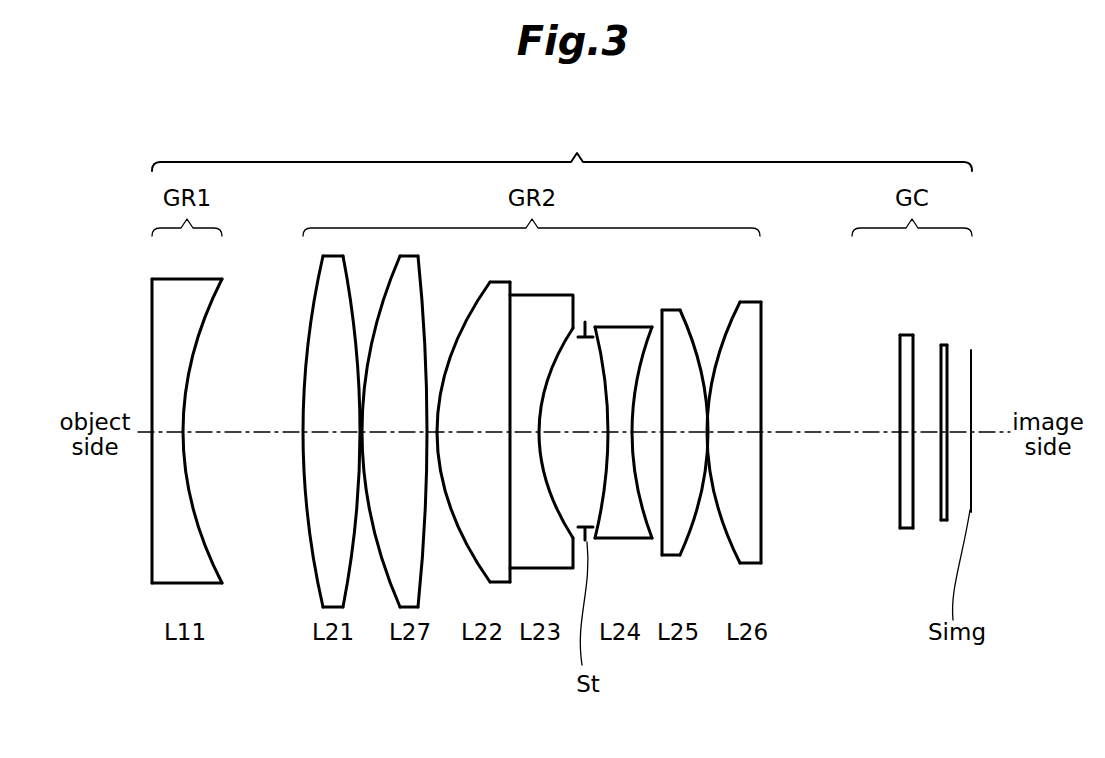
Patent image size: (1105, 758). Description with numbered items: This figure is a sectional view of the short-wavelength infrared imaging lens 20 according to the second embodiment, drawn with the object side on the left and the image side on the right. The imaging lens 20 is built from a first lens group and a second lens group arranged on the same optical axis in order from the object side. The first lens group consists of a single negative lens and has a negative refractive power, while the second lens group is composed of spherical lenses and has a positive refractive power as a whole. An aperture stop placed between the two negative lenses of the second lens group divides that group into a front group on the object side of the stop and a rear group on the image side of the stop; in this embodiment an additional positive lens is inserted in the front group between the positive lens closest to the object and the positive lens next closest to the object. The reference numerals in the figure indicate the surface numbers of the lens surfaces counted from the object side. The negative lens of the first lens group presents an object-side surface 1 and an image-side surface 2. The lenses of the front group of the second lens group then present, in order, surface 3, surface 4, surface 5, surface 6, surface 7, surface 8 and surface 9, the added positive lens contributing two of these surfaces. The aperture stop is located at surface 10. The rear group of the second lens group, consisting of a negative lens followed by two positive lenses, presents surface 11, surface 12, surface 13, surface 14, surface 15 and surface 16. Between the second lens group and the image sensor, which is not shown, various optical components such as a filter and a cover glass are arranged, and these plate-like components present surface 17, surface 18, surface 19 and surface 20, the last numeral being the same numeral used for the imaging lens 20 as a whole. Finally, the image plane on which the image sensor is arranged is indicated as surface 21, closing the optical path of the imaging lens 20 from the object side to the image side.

The first lens surface 1 is at (152, 528).
The second lens surface 2 is at (190, 493).
The third lens surface 3 is at (303, 521).
The fourth lens surface 4 is at (360, 511).
The fifth lens surface 5 is at (395, 599).
The sixth lens surface 6 is at (427, 556).
The seventh lens surface 7 is at (437, 462).
The eighth lens surface 8 is at (510, 524).
The ninth lens surface 9 is at (548, 388).
The tenth surface (aperture stop) 10 is at (582, 418).
The eleventh lens surface 11 is at (600, 466).
The twelfth lens surface 12 is at (637, 467).
The thirteenth lens surface 13 is at (662, 550).
The fourteenth lens surface 14 is at (705, 492).
The fifteenth lens surface 15 is at (735, 558).
The sixteenth lens surface 16 is at (765, 525).
The seventeenth surface 17 is at (897, 450).
The eighteenth surface 18 is at (913, 508).
The nineteenth surface 19 is at (938, 483).
The short-wavelength infrared imaging lens 20 is at (985, 481).
The twenty-first surface (image plane) 21 is at (970, 387).